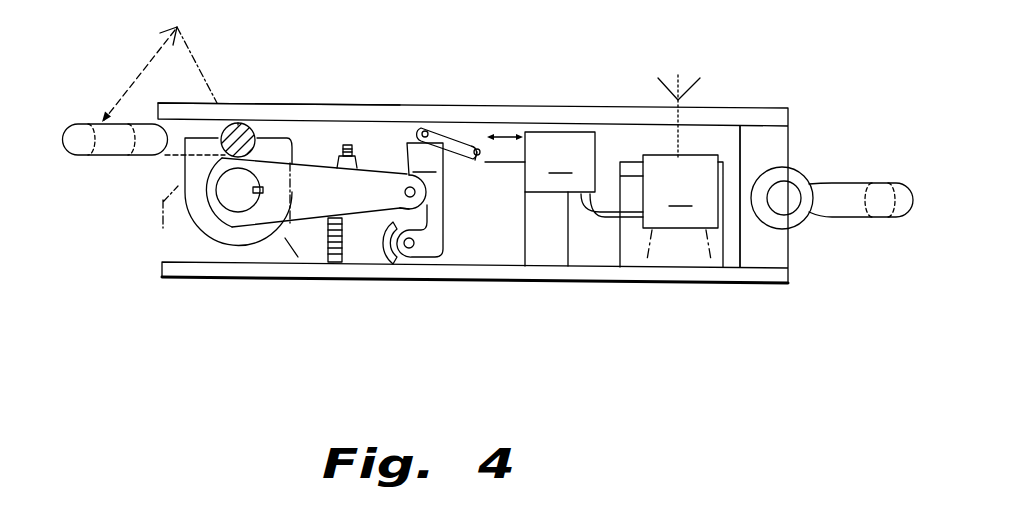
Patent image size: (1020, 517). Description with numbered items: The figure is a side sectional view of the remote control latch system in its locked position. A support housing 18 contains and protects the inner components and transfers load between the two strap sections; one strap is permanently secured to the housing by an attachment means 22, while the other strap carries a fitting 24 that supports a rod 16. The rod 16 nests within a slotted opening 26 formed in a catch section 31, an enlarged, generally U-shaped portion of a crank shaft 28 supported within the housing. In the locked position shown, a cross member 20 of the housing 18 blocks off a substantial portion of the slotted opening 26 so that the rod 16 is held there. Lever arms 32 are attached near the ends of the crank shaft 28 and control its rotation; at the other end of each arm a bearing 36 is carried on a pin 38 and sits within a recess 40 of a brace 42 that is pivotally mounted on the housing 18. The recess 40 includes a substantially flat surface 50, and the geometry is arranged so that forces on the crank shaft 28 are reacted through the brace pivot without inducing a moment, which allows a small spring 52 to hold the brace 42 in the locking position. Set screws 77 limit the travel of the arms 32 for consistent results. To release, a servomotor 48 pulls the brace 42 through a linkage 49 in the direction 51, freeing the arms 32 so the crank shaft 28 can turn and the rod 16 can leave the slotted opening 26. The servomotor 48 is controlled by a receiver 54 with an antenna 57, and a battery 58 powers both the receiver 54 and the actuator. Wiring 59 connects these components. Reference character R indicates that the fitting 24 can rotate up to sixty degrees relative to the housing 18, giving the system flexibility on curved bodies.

The rod 16 is at (247, 128).
The support housing 18 is at (515, 282).
The cross member 20 is at (157, 114).
The attachment means 22 is at (885, 183).
The fitting 24 is at (78, 124).
The slotted opening 26 is at (217, 132).
The crank shaft 28 is at (238, 212).
The catch section 31 is at (192, 222).
The lever arms 32 is at (300, 235).
The bearing 36 is at (398, 208).
The pin 38 is at (398, 201).
The recess 40 is at (441, 186).
The brace 42 is at (420, 200).
The servomotor 48 is at (540, 199).
The linkage 49 is at (457, 131).
The substantially flat surface 50 is at (385, 186).
The direction 51 is at (506, 135).
The spring 52 is at (408, 198).
The receiver 54 is at (680, 167).
The antenna 57 is at (680, 137).
The battery 58 is at (632, 186).
The wire 59 is at (596, 280).
The set screws 77 is at (347, 144).
The rotation reference character R is at (110, 120).